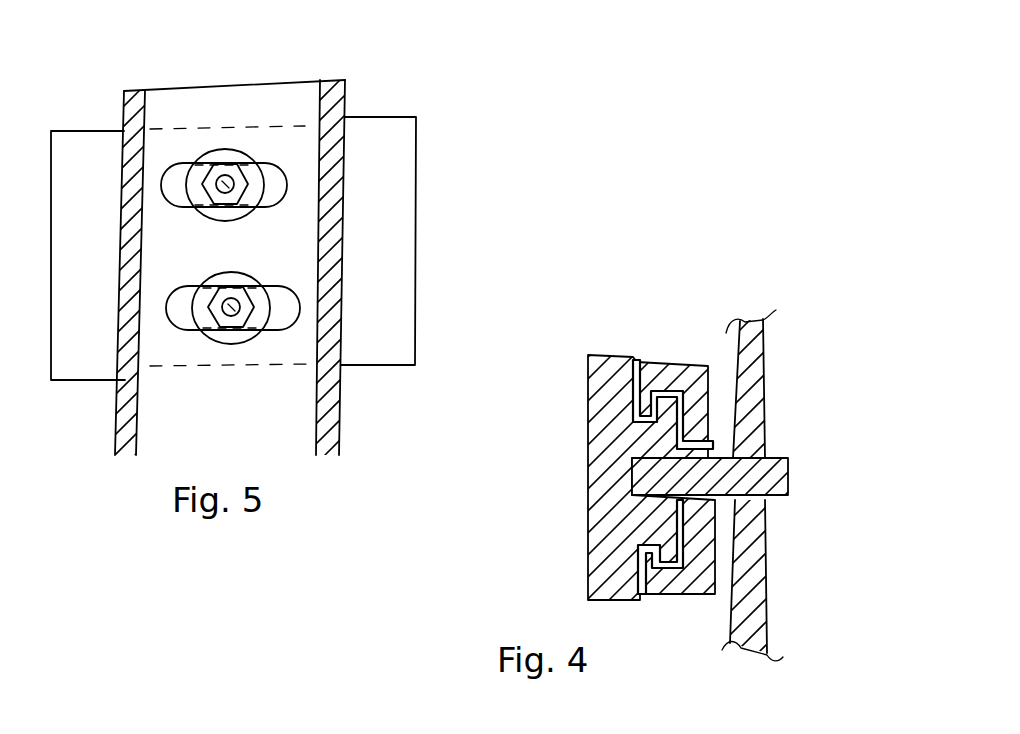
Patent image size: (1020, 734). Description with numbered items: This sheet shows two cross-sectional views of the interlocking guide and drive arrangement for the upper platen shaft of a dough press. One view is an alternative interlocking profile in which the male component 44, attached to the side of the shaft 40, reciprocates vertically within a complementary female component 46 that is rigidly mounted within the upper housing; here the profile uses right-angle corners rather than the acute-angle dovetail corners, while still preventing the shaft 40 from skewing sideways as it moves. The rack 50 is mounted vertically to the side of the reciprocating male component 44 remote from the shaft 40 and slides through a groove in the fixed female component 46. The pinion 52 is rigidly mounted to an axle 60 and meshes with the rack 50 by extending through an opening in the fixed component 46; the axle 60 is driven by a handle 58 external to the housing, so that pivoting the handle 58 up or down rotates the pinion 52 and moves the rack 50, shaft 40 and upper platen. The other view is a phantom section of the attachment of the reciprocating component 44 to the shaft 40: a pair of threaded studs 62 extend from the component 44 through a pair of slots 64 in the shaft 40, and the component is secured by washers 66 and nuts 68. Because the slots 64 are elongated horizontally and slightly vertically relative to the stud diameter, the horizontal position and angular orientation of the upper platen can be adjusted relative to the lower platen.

In FIG. 5, the shaft 40 is at (310, 78).
In FIG. 5, the male component 44 is at (420, 148).
In FIG. 4, the male component 44 is at (586, 408).
In FIG. 4, the female component 46 is at (665, 362).
In FIG. 4, the rack 50 is at (600, 487).
In FIG. 4, the pinion 52 is at (788, 473).
In FIG. 4, the handle 58 is at (772, 356).
In FIG. 4, the axle 60 is at (765, 404).
In FIG. 5, the threaded studs 62 is at (238, 198).
In FIG. 5, the slots 64 is at (174, 299).
In FIG. 5, the washers 66 is at (210, 148).
In FIG. 5, the nuts 68 is at (228, 162).